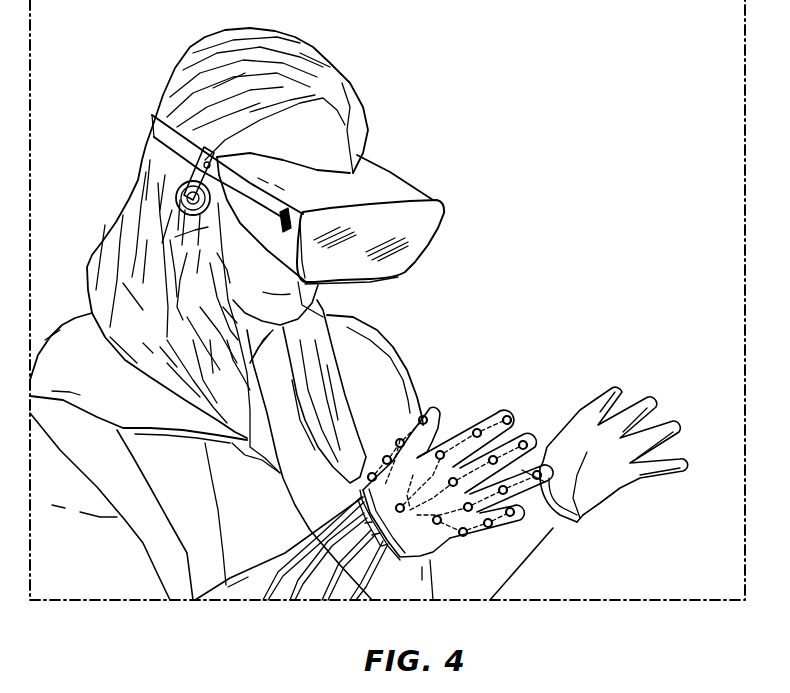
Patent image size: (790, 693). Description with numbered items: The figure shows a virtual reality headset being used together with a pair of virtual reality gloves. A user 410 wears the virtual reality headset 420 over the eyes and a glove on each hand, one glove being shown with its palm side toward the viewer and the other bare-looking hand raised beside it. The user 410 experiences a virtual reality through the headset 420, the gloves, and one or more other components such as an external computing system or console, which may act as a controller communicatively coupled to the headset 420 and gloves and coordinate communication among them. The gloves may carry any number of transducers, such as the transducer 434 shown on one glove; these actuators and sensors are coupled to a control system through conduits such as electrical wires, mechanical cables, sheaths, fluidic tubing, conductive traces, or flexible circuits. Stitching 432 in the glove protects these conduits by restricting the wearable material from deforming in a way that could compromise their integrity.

The user 410 is at (122, 78).
The virtual reality headset 420 is at (440, 212).
The stitching 432 is at (453, 538).
The transducer 434 is at (578, 500).